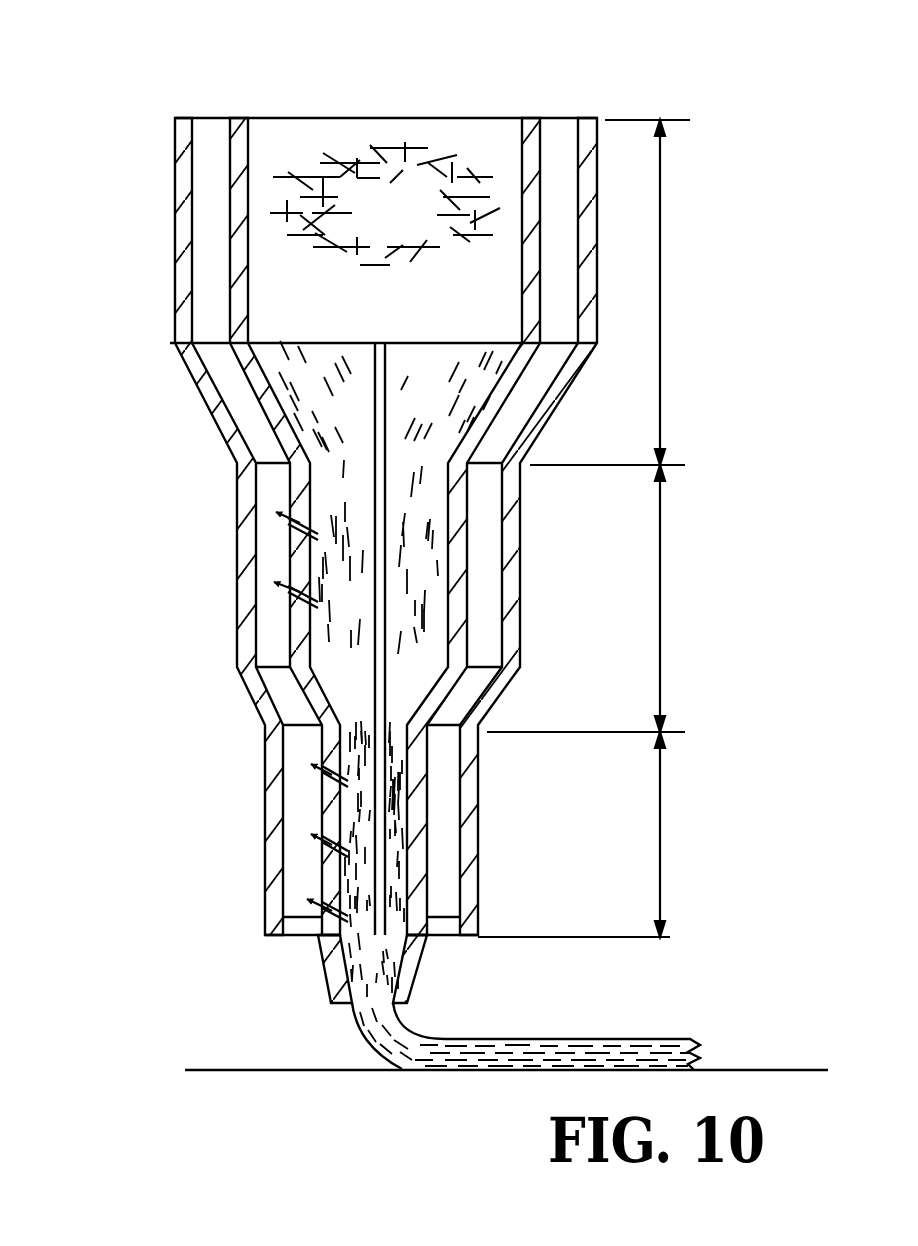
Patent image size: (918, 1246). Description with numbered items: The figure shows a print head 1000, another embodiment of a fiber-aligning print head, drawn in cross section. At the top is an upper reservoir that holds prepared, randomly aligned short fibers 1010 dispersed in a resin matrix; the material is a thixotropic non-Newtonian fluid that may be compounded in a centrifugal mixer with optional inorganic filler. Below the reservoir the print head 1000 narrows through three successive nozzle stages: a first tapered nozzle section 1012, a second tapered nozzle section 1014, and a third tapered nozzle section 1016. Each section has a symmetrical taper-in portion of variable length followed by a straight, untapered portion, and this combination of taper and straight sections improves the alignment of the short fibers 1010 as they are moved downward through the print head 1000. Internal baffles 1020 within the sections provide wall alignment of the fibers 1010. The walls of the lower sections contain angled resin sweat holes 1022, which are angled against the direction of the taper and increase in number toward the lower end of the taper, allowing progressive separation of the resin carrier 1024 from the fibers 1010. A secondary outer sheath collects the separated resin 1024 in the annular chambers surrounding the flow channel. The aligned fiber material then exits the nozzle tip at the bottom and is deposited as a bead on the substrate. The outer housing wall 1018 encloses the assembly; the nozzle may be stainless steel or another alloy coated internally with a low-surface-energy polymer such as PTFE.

The print head 1000 is at (354, 55).
The randomly aligned short fibers dispersed in resin 1010 is at (432, 229).
The first tapered nozzle section 1012 is at (663, 262).
The second tapered nozzle section 1014 is at (660, 605).
The third tapered nozzle section 1016 is at (658, 838).
The outer housing wall 1018 is at (170, 325).
The internal baffles 1020 is at (417, 360).
The angled resin sweat holes 1022 is at (297, 605).
The resin carrier 1024 is at (210, 175).